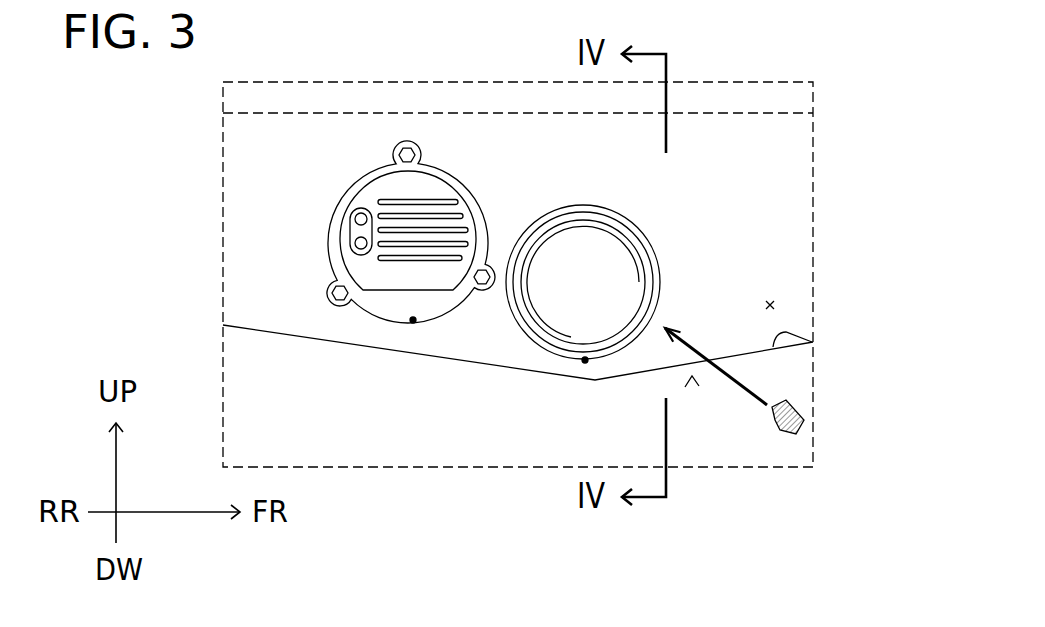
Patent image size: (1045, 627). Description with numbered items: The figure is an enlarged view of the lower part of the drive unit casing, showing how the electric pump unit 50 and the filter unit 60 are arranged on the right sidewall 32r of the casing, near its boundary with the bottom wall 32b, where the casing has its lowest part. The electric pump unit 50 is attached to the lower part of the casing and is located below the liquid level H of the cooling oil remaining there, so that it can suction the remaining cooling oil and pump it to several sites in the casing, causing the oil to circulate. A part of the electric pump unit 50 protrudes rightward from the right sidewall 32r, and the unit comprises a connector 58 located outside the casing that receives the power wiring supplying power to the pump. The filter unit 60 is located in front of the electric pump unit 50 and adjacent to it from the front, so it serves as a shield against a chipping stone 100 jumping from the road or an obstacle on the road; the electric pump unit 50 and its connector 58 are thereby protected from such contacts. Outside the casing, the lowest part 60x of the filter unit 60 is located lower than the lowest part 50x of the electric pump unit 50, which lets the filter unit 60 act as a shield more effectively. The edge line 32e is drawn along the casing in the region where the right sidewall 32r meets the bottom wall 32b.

The liquid level H is at (248, 112).
The electric pump unit 50 is at (387, 300).
The lowest part of the electric pump unit 50x is at (413, 320).
The connector 58 is at (355, 232).
The filter unit 60 is at (543, 333).
The lowest part of the filter unit 60x is at (585, 360).
The edge of partition wall 32e is at (813, 342).
The right sidewall 32r is at (772, 305).
The bottom wall 32b is at (692, 377).
The chipping stone 100 is at (805, 422).